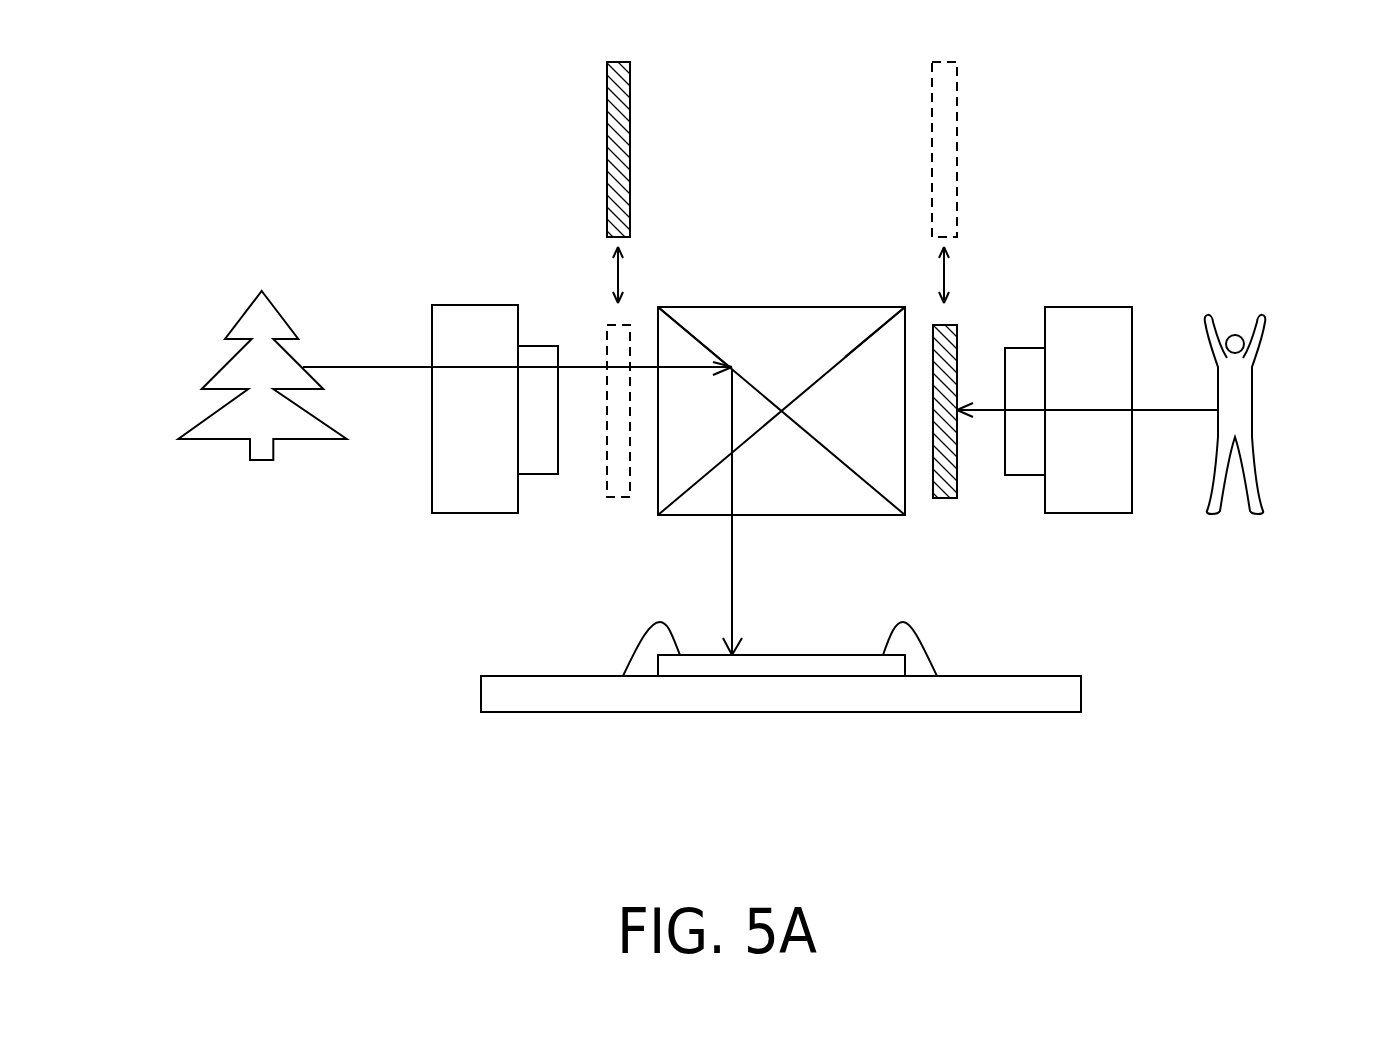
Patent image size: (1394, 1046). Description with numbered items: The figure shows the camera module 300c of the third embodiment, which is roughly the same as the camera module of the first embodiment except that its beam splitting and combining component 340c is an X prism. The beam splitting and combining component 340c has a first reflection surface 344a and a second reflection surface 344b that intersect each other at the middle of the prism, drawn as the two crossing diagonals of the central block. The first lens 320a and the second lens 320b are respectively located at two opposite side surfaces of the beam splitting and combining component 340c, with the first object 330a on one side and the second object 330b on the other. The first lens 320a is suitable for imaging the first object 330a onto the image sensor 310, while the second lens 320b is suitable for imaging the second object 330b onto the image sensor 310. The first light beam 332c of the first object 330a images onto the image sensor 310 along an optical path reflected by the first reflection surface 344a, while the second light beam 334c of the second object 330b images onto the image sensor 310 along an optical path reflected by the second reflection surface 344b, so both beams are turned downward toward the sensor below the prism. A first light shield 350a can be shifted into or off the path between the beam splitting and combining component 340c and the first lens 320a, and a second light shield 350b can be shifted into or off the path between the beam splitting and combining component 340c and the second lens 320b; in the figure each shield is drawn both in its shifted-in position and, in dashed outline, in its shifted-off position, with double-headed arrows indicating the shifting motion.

The camera module 300c is at (1108, 602).
The image sensor 310 is at (772, 665).
The first lens 320a is at (470, 330).
The second lens 320b is at (1095, 332).
The first object 330a is at (226, 362).
The second object 330b is at (1252, 395).
The first light beam 332c is at (387, 367).
The second light beam 334c is at (1172, 410).
The beam splitting and combining component 340c is at (700, 500).
The first reflection surface 344a is at (720, 352).
The second reflection surface 344b is at (845, 353).
The first light shield 350a is at (607, 342).
The second light shield 350b is at (957, 353).